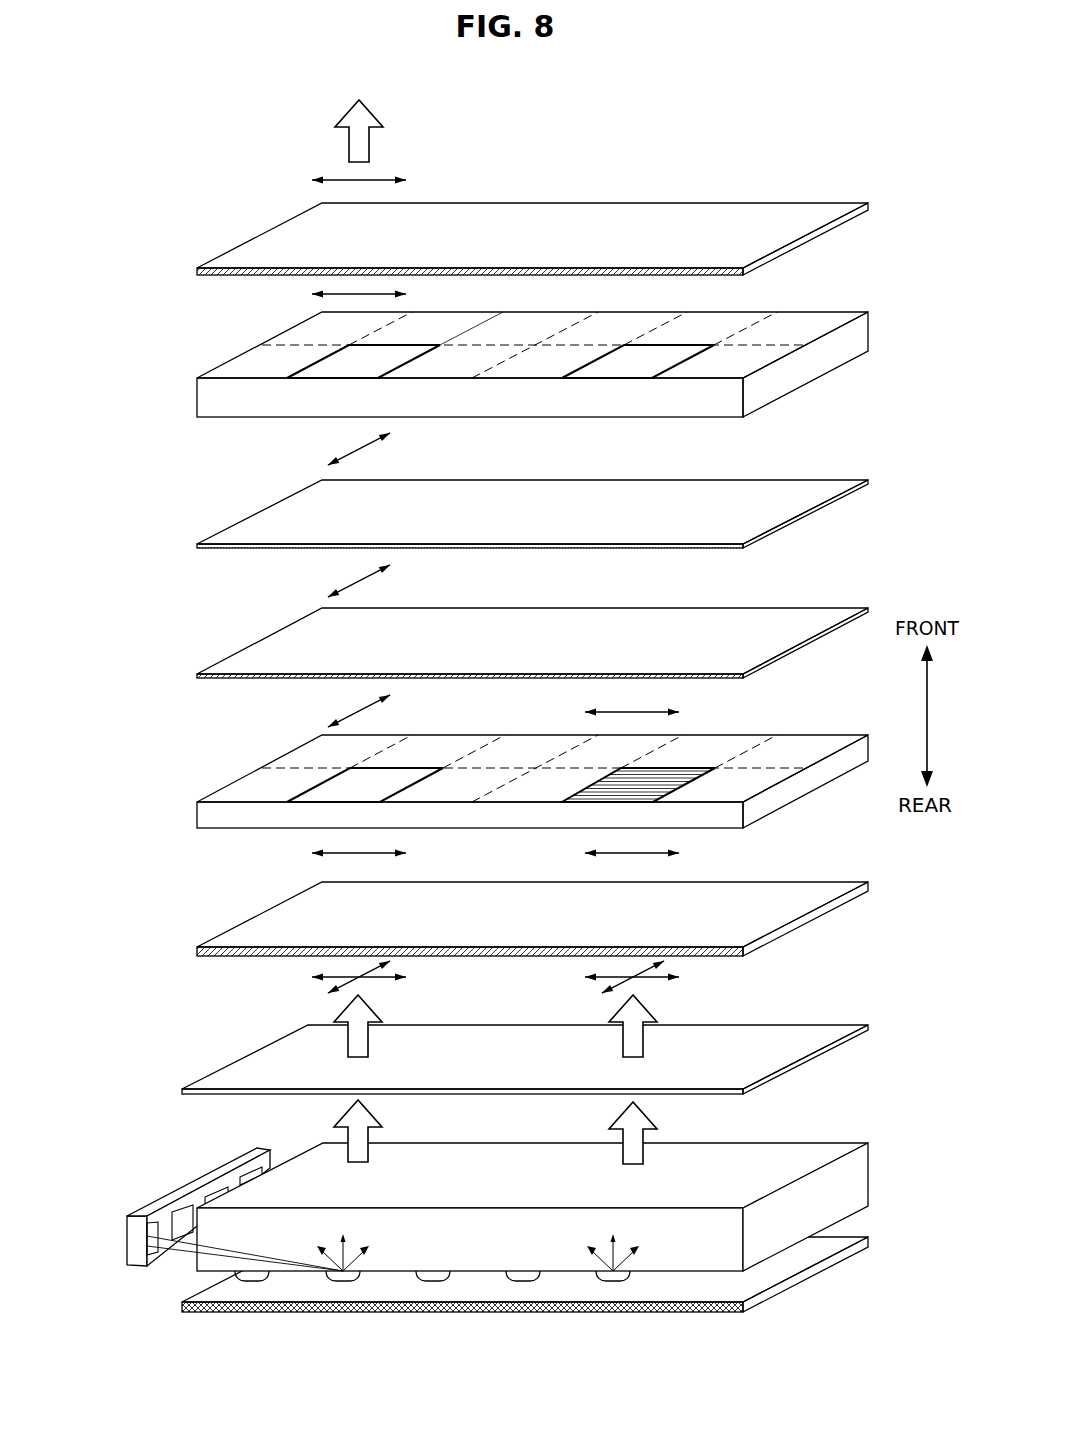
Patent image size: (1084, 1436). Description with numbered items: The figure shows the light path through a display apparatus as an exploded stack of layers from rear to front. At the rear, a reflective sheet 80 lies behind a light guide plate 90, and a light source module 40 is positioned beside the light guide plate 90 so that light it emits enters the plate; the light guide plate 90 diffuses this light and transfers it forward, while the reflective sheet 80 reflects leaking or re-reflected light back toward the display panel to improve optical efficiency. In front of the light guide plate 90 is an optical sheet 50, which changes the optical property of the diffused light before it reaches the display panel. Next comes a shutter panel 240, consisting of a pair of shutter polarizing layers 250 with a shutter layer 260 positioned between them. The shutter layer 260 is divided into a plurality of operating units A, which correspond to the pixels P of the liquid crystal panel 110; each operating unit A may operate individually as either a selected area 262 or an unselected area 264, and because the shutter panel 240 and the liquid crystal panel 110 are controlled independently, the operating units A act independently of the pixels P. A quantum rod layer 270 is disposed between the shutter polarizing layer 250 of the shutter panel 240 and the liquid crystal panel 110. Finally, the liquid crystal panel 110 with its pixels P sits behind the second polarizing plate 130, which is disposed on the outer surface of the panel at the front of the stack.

The second polarizing plate 130 is at (196, 272).
The liquid crystal panel 110 is at (492, 359).
The pixel P is at (256, 353).
The quantum rod layer 270 is at (196, 547).
The shutter panel 240 is at (103, 677).
The shutter polarizing layer 250 is at (196, 676).
The shutter layer 260 is at (491, 758).
The operating unit A is at (290, 778).
The selected area 262 is at (418, 768).
The unselected area 264 is at (700, 767).
The optical sheet 50 is at (182, 1093).
The light source module 40 is at (127, 1239).
The reflective sheet 80 is at (270, 1313).
The light guide plate 90 is at (480, 1258).